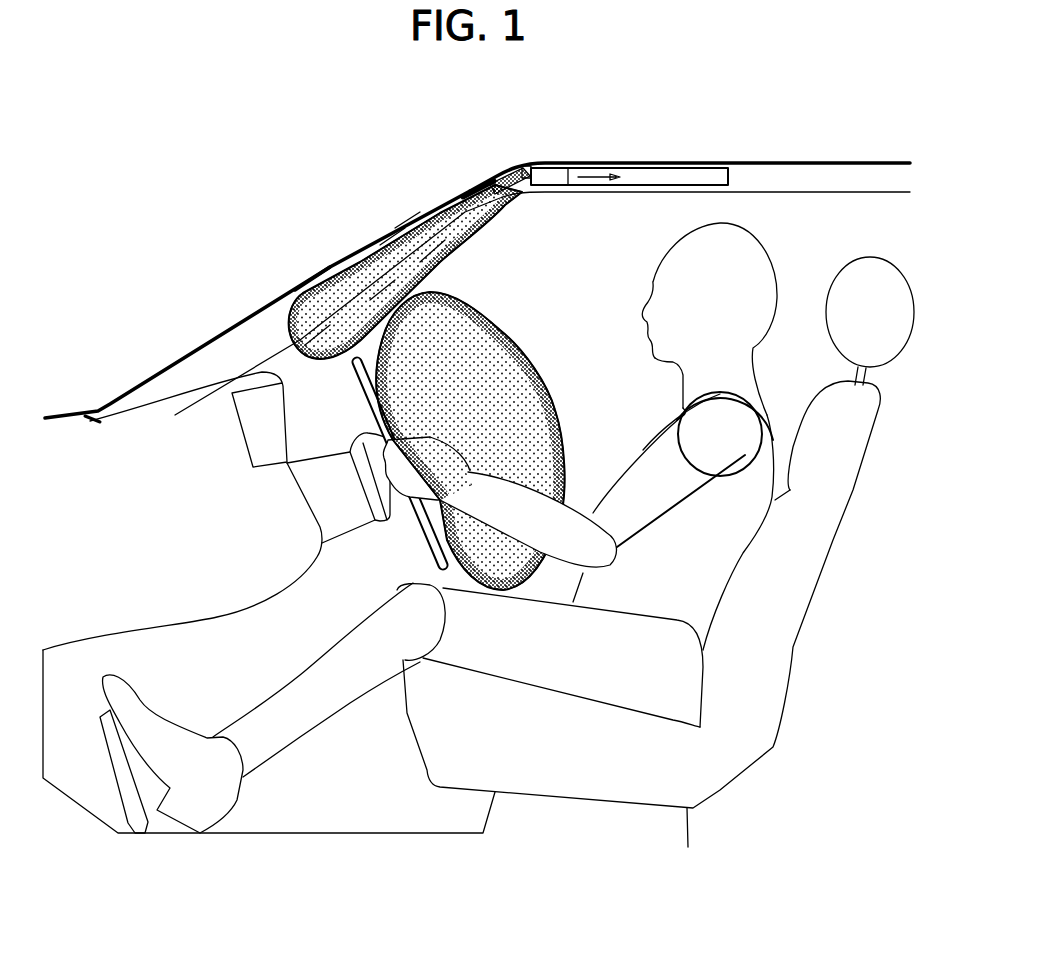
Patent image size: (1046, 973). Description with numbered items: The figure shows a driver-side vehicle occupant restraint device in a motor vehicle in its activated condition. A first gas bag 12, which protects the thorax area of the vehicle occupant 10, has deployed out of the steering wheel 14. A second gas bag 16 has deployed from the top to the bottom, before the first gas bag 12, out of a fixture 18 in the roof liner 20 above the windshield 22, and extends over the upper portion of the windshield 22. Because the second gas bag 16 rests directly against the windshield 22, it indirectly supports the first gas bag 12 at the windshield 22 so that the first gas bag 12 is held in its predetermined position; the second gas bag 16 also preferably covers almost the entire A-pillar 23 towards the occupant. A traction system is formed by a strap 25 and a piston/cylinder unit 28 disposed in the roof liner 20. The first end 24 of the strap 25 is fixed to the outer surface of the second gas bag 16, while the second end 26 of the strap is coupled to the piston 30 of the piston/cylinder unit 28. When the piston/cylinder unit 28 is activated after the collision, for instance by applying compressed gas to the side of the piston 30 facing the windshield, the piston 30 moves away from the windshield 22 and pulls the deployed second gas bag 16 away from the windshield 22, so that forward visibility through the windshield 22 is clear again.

The vehicle occupant 10 is at (757, 277).
The first gas bag 12 is at (500, 360).
The steering wheel 14 is at (393, 518).
The second gas bag 16 is at (423, 260).
The fixture 18 is at (472, 186).
The roof liner 20 is at (840, 163).
The windshield 22 is at (234, 326).
The A-pillar 23 is at (240, 363).
The first end 24 is at (306, 290).
The strap 25 is at (399, 225).
The second end 26 is at (528, 166).
The piston/cylinder unit 28 is at (735, 178).
The piston 30 is at (558, 177).